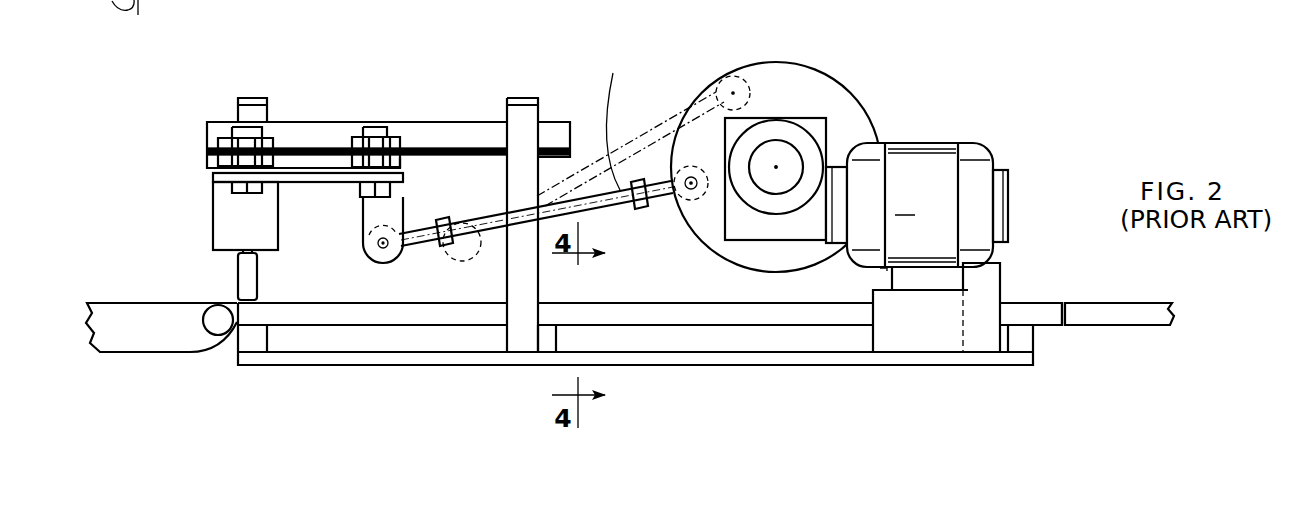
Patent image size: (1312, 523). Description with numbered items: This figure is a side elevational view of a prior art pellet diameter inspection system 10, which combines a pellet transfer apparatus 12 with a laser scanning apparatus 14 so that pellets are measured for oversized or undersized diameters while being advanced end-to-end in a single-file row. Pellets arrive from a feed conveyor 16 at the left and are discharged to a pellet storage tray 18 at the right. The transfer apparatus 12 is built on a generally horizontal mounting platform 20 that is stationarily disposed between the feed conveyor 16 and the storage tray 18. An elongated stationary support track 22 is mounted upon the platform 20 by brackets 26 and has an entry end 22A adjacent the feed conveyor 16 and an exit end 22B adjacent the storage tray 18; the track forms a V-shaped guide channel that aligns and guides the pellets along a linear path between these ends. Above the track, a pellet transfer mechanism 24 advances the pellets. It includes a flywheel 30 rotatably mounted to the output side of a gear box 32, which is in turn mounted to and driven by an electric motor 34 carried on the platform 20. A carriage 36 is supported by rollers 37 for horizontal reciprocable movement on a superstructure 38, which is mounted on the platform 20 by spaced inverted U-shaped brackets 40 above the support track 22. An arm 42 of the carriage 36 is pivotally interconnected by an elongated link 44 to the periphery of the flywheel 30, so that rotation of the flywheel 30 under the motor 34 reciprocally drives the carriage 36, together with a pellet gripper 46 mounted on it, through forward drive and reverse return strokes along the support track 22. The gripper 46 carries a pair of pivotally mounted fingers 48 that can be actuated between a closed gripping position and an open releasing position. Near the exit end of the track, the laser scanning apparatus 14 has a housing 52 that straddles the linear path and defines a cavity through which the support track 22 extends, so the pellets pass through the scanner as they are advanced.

The pellet diameter inspection system 10 is at (987, 100).
The pellet transfer apparatus 12 is at (700, 70).
The laser scanning apparatus 14 is at (1016, 264).
The feed conveyor 16 is at (160, 343).
The pellet storage tray 18 is at (1103, 322).
The mounting platform 20 is at (993, 358).
The stationary support track 22 is at (358, 320).
The entry end 22A is at (237, 335).
The exit end 22B is at (1040, 312).
The pellet transfer mechanism 24 is at (662, 242).
The brackets 26 is at (262, 340).
The flywheel 30 is at (858, 98).
The gear box 32 is at (803, 118).
The electric motor 34 is at (990, 144).
The carriage 36 is at (320, 172).
The rollers 37 is at (272, 140).
The superstructure 38 is at (462, 121).
The inverted U-shaped brackets 40 is at (252, 96).
The arm 42 is at (365, 222).
The elongated link 44 is at (630, 140).
The pellet gripper 46 is at (212, 205).
The fingers 48 is at (237, 272).
The housing 52 is at (1012, 260).